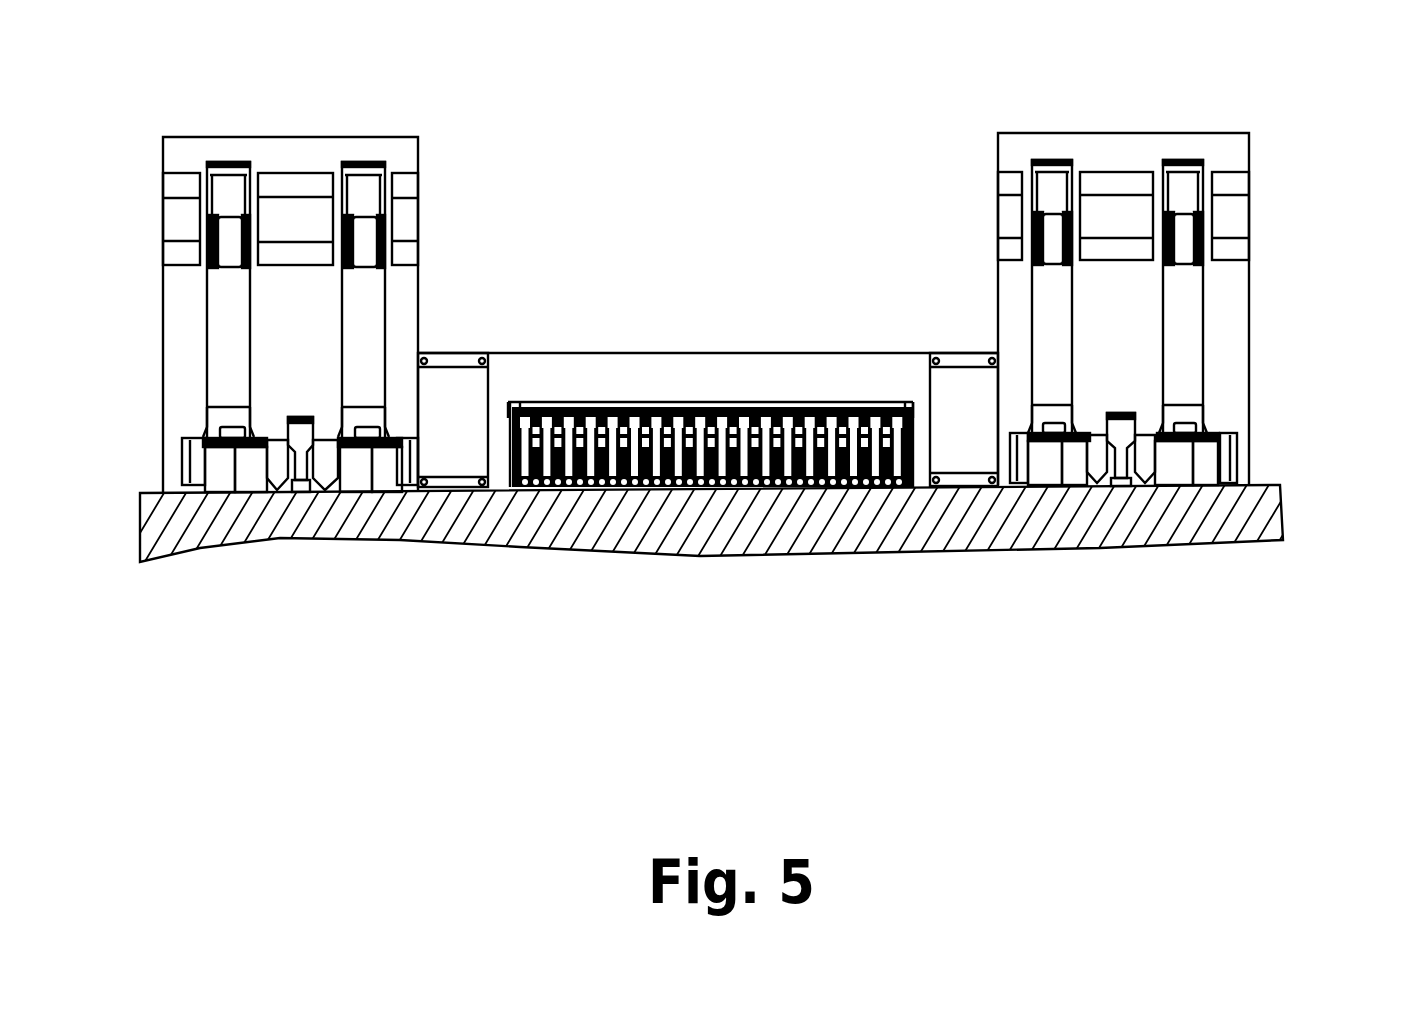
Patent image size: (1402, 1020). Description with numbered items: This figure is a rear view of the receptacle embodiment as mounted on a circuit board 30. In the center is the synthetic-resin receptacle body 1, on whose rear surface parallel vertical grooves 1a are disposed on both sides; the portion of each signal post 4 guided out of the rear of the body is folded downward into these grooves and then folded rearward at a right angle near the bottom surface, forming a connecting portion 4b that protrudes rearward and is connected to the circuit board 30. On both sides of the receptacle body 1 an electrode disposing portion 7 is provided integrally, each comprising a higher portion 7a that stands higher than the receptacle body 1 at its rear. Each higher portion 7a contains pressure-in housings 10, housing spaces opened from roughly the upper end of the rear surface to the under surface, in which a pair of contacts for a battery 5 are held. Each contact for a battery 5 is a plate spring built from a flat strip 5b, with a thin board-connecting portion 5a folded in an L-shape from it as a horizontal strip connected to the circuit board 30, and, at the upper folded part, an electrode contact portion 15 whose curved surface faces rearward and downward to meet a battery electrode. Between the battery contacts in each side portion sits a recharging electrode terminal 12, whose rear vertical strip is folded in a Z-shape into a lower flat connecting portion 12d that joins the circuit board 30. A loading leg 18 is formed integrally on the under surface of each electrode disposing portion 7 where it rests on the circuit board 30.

The receptacle body 1 is at (730, 353).
The vertical grooves 1a is at (508, 403).
The signal post 4 is at (530, 415).
The connecting portion 4b is at (522, 490).
The contact for a battery 5 is at (225, 317).
The board-connecting portion 5a is at (193, 493).
The flat strip 5b is at (237, 470).
The electrode disposing portion 7 is at (275, 152).
The higher portion 7a is at (405, 158).
The pressure-in housings 10 is at (210, 360).
The recharging electrode terminal 12 is at (287, 416).
The connecting portion 12d is at (303, 470).
The electrode contact portion 15 is at (212, 222).
The loading leg 18 is at (183, 470).
The circuit board 30 is at (1277, 507).